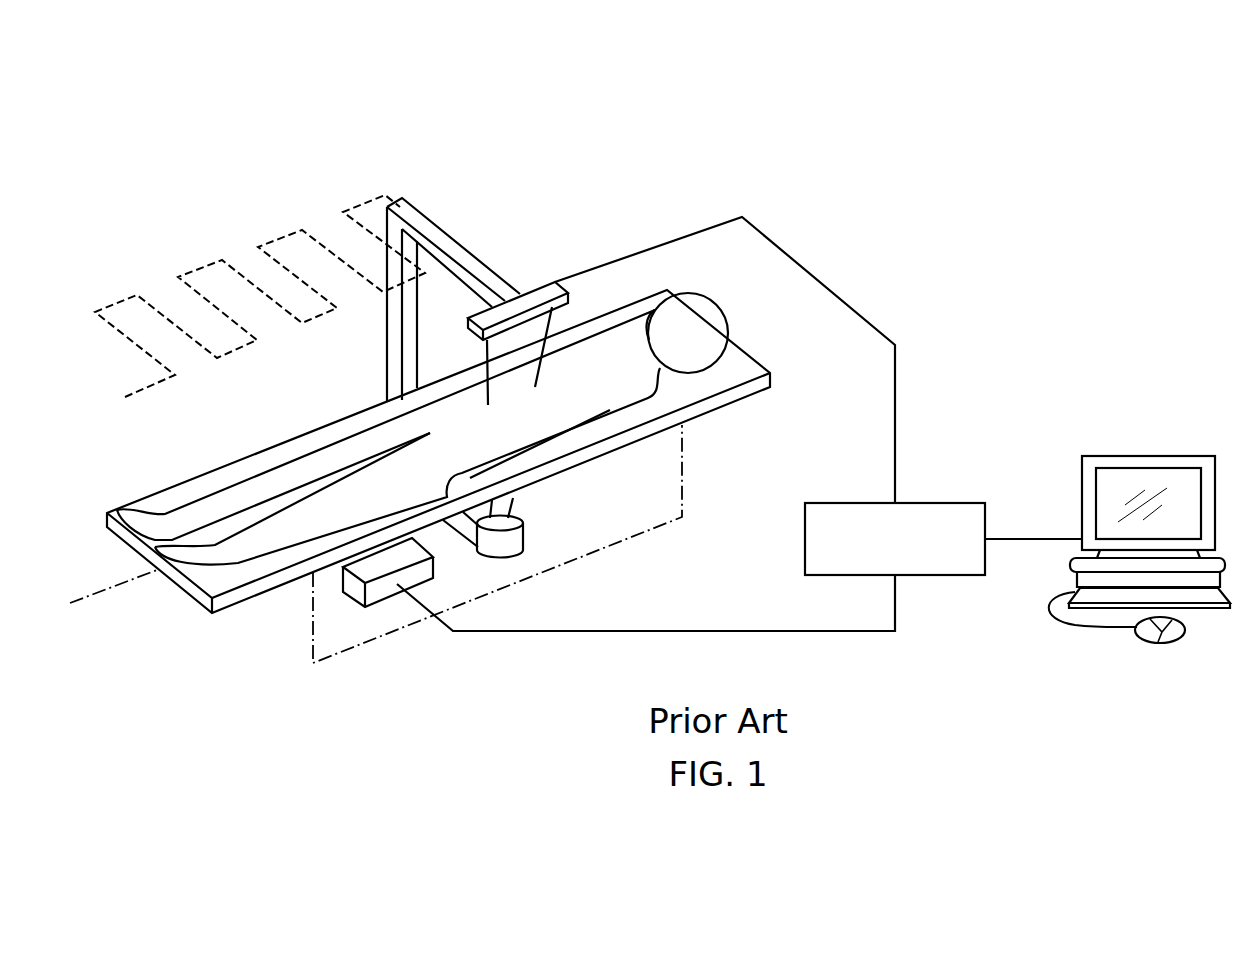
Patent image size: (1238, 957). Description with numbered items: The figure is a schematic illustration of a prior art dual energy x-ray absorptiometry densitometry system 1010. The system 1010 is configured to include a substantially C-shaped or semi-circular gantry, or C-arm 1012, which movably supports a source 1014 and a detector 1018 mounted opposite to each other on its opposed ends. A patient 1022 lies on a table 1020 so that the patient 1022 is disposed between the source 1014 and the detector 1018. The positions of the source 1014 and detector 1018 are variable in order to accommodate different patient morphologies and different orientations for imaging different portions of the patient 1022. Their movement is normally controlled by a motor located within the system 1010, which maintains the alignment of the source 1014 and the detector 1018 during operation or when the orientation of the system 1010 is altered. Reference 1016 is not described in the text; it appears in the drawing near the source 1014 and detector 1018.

The densitometry system 1010 is at (849, 186).
The C-arm 1012 is at (417, 220).
The source 1014 is at (525, 550).
The radiation beam 1016 is at (537, 327).
The detector 1018 is at (538, 288).
The table 1020 is at (258, 597).
The patient 1022 is at (218, 500).